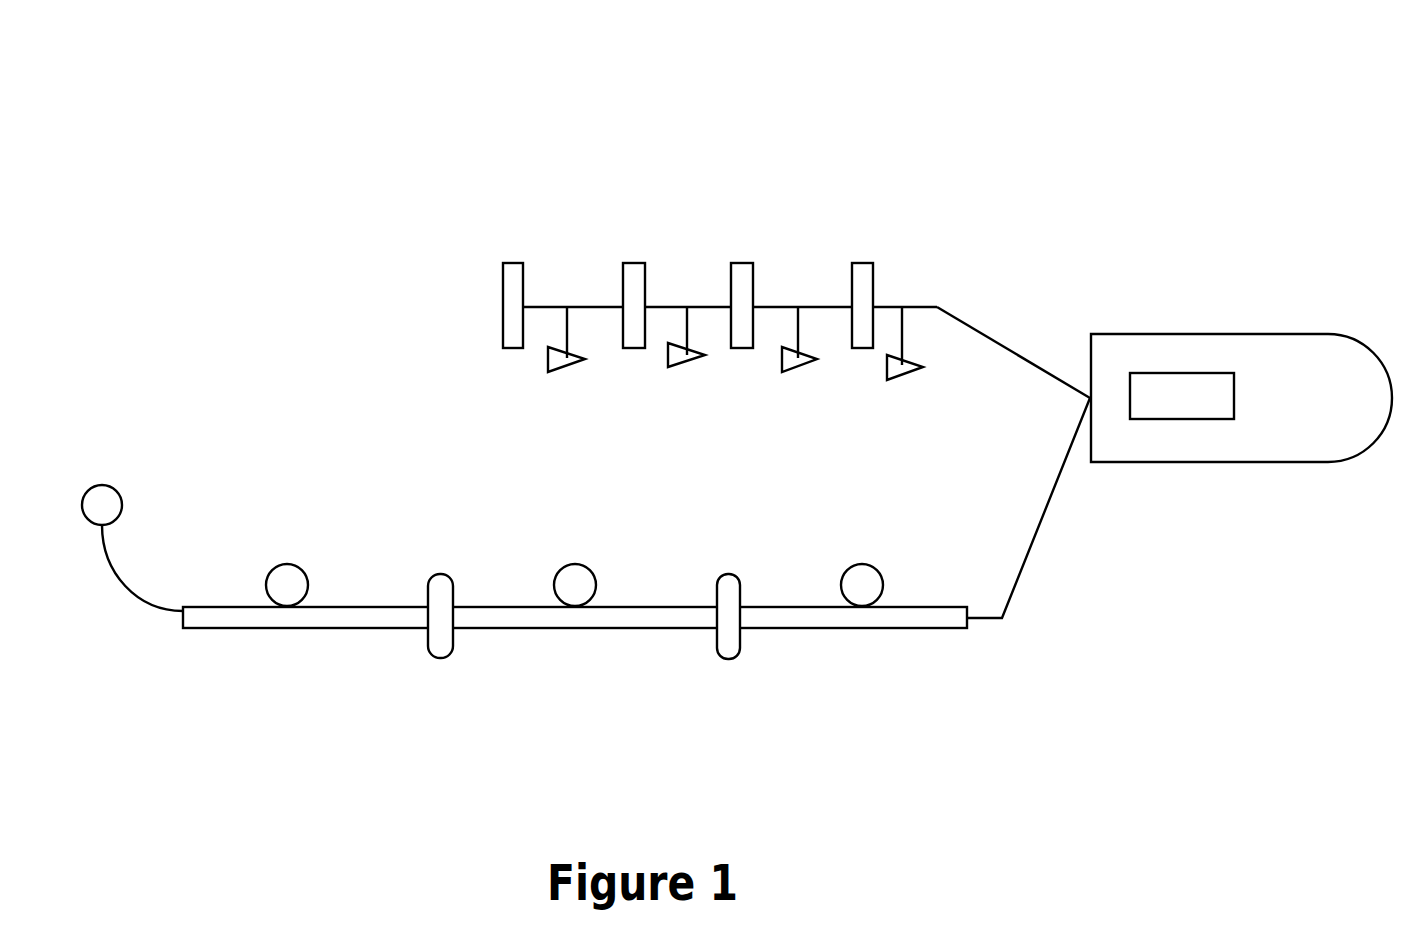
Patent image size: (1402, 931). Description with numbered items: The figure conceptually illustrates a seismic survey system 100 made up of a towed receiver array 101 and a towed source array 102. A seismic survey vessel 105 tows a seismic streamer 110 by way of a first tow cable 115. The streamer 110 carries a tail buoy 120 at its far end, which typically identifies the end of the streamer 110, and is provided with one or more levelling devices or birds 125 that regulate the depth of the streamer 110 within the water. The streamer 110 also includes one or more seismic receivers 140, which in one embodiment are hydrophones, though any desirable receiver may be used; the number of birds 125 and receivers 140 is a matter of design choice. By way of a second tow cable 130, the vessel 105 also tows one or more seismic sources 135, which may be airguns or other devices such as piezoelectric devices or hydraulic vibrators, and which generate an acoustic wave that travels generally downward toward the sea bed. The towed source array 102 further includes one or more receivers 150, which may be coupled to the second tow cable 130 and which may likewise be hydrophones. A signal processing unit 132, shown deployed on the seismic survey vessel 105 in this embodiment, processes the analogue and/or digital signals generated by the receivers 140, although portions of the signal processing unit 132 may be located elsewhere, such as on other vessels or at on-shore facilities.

The seismic survey system 100 is at (222, 45).
The towed receiver array 101 is at (245, 715).
The towed source array 102 is at (843, 115).
The seismic survey vessel 105 is at (1242, 334).
The seismic streamer 110 is at (877, 628).
The first tow cable 115 is at (1038, 538).
The tail buoy 120 is at (102, 485).
The levelling devices or birds 125 is at (287, 564).
The second tow cable 130 is at (1007, 342).
The signal processing unit 132 is at (1163, 411).
The seismic sources 135 is at (512, 263).
The seismic receivers 140 is at (440, 658).
The receivers 150 is at (560, 365).